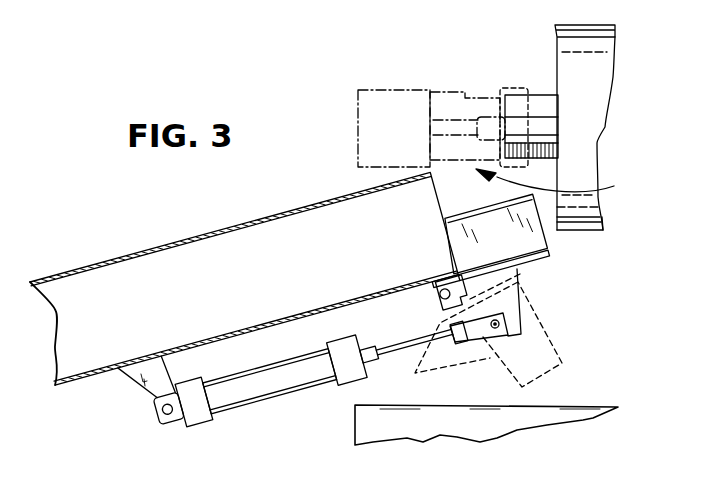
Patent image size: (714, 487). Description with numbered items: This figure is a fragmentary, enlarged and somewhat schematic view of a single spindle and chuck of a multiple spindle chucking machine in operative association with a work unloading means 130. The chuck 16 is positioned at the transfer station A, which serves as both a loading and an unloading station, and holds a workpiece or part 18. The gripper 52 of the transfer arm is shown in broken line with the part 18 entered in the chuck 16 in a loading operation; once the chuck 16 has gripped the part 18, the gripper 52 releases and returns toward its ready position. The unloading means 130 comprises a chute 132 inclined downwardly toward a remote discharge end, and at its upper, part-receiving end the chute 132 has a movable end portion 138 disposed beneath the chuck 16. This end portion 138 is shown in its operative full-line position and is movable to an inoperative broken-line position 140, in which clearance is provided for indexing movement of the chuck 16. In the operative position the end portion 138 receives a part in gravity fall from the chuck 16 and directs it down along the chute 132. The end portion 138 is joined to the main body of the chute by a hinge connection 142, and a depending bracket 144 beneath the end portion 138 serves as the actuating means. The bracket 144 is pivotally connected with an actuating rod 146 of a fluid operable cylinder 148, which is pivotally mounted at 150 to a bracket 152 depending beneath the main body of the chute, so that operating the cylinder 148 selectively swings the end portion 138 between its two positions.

The unloading means 130 is at (168, 224).
The chute 132 is at (247, 332).
The movable end portion 138 is at (549, 252).
The inoperative position 140 is at (552, 338).
The hinge connection 142 is at (427, 287).
The depending bracket 144 is at (512, 312).
The actuating rod 146 is at (399, 358).
The fluid operable cylinder 148 is at (275, 388).
The pivotal mounting 150 is at (156, 417).
The bracket 152 is at (142, 382).
The gripper 52 is at (378, 103).
The workpiece or part 18 is at (510, 88).
The chuck 16 is at (540, 103).
The transfer station A is at (552, 179).